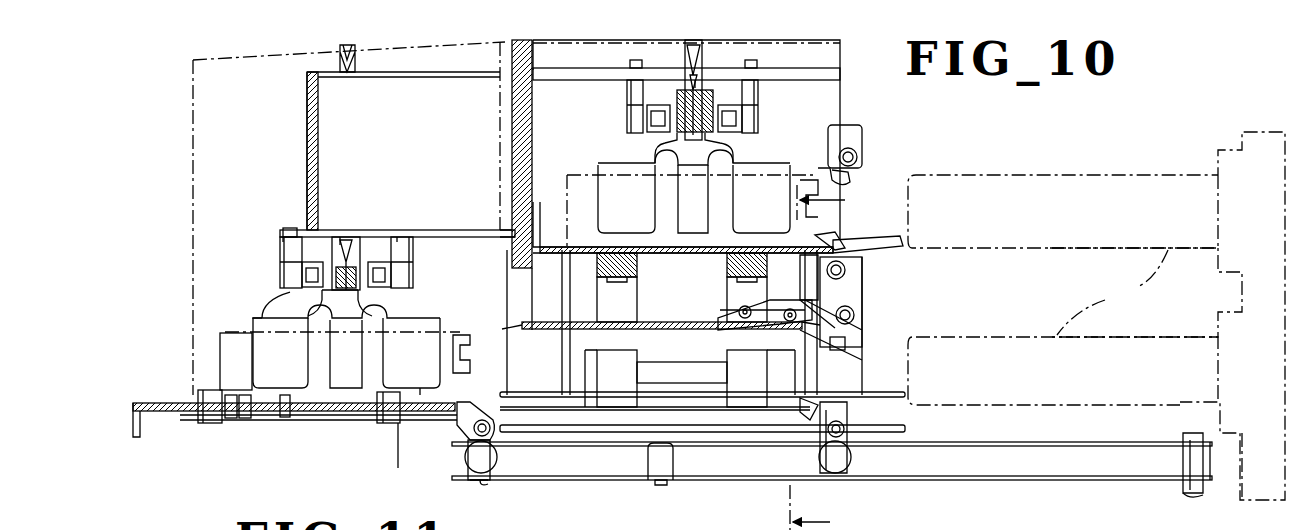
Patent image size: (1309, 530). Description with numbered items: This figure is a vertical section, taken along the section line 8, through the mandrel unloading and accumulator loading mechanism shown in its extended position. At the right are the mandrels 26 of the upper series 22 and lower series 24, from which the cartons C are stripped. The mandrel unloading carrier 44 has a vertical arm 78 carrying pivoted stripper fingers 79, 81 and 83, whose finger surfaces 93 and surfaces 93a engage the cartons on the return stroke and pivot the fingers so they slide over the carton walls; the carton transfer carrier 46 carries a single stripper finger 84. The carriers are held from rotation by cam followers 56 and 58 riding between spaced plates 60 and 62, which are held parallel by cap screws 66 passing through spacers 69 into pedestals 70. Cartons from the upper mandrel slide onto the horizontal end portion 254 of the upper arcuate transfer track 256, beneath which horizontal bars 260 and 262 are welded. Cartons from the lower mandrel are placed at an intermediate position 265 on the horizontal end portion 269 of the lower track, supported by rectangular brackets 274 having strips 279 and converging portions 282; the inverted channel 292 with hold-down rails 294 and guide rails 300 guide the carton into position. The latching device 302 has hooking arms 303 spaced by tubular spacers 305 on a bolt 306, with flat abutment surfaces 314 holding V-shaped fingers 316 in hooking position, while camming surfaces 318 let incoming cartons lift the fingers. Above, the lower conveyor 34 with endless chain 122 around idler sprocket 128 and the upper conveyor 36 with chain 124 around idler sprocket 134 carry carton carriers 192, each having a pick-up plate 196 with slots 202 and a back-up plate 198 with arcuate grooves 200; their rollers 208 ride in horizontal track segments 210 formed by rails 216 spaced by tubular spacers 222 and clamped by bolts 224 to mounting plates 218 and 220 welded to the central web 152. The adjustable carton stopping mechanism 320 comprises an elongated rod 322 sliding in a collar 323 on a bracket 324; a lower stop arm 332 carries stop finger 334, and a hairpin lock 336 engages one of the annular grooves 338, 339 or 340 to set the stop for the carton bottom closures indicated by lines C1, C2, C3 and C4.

The central web 152 is at (510, 95).
The horizontal mounting plate 218 is at (470, 230).
The lower accumulator conveyor 34 is at (262, 320).
The tubular spacers 222 is at (285, 255).
The rails 216 is at (300, 272).
The bolts 224 is at (290, 228).
The rollers 208 is at (300, 262).
The horizontal track segments 210 is at (372, 262).
The lower idler sprocket 128 is at (348, 260).
The endless chain 122 is at (375, 292).
The back-up plate 198 is at (250, 300).
The pick-up plate 196 is at (255, 325).
The arcuate grooves 200 is at (340, 322).
The slots 202 is at (385, 352).
The hairpin lock 336 is at (395, 395).
The quart carton bottom closure line C1 is at (218, 345).
The pint carton bottom closure line C2 is at (313, 352).
The one-third quart carton bottom closure line C3 is at (340, 350).
The one-half pint carton bottom closure line C4 is at (370, 350).
The cartons C is at (440, 335).
The elongated rod 322 is at (190, 400).
The stop finger 334 is at (215, 390).
The annular groove 339 is at (230, 420).
The annular groove 338 is at (246, 420).
The lower stop arm 332 is at (215, 423).
The annular groove 340 is at (225, 420).
The collar 323 is at (390, 423).
The bracket 324 is at (400, 468).
The stripper finger 84 is at (462, 420).
The carton transfer carrier 46 is at (462, 465).
The cam follower 58 is at (490, 472).
The horizontal mounting plate 220 is at (588, 60).
The idler sprocket 134 is at (686, 58).
The carton carriers 192 is at (655, 158).
The endless chain 124 is at (728, 140).
The horizontal end portion 254 is at (626, 199).
The horizontal bar 260 is at (612, 255).
The upper arcuate transfer track 256 is at (720, 235).
The horizontal bar 262 is at (745, 255).
The adjustable carton stopping mechanism 320 is at (560, 235).
The inverted channel 292 is at (610, 340).
The hold-down rails 294 is at (648, 345).
The downwardly extending strip 279 is at (745, 358).
The rectangular brackets 274 is at (735, 372).
The carton guide rails 300 is at (880, 392).
The horizontal end portion 269 is at (885, 425).
The plate 60 is at (945, 440).
The plate 62 is at (945, 478).
The cap screws 66 is at (1185, 433).
The spacers 69 is at (1190, 462).
The pedestals 70 is at (1185, 493).
The downwardly converging portion 282 is at (740, 405).
The intermediate position 265 is at (558, 348).
The stripper finger 83 is at (822, 420).
The cam follower 56 is at (850, 458).
The tubular spacers 305 is at (745, 305).
The hooking arms 303 is at (738, 312).
The bolt 306 is at (740, 315).
The latching device 302 is at (775, 310).
The bracket 93 is at (818, 180).
The upper accumulator conveyor 36 is at (782, 158).
The vertical arm 78 is at (850, 128).
The stripper finger 79 is at (845, 182).
The surfaces 93a is at (825, 235).
The stripper finger 81 is at (840, 240).
The section line 8 is at (826, 357).
The mandrel unloading carrier 44 is at (850, 280).
The V-shaped fingers 316 is at (855, 302).
The camming surface 318 is at (848, 340).
The flat abutment surfaces 314 is at (845, 352).
The upper series of mandrels 22 is at (1025, 170).
The mandrels 26 is at (1146, 292).
The lower series of mandrels 24 is at (938, 328).